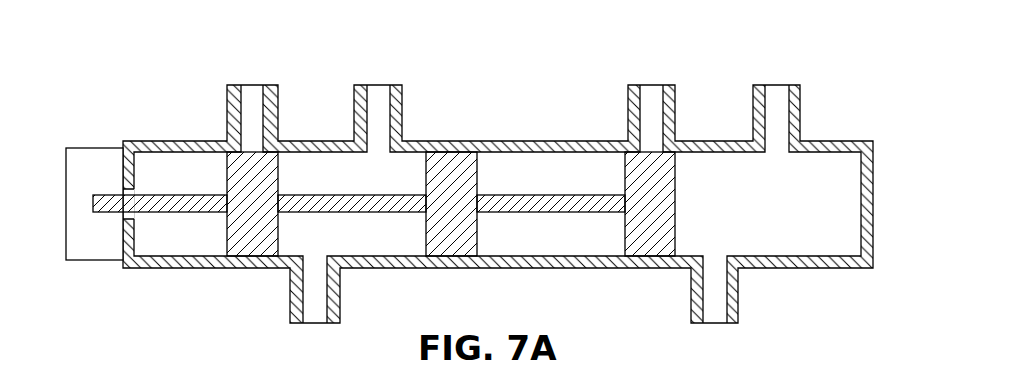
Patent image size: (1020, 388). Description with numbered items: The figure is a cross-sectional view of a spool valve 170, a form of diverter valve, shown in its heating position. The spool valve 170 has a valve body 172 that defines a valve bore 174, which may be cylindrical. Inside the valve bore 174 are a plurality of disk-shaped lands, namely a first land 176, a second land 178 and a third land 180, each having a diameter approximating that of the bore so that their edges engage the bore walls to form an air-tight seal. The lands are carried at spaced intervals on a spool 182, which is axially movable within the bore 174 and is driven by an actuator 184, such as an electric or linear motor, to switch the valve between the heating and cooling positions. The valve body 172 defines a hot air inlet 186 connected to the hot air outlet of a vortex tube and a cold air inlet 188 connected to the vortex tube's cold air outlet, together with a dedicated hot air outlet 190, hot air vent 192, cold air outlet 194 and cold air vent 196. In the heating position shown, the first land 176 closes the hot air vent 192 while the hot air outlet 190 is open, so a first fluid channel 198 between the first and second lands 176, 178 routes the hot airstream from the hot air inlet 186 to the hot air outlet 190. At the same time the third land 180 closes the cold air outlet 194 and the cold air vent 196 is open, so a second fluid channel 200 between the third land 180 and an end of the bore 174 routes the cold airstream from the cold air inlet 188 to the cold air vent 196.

The spool valve 170 is at (471, 200).
The valve body 172 is at (640, 270).
The valve bore 174 is at (802, 184).
The first land 176 is at (252, 257).
The second land 178 is at (477, 237).
The third land 180 is at (675, 212).
The spool 182 is at (553, 200).
The actuator 184 is at (102, 148).
The hot air inlet 186 is at (298, 323).
The cold air inlet 188 is at (730, 323).
The hot air outlet 190 is at (362, 86).
The hot air vent 192 is at (237, 86).
The cold air outlet 194 is at (668, 86).
The cold air vent 196 is at (797, 86).
The first fluid channel 198 is at (352, 232).
The second fluid channel 200 is at (787, 232).